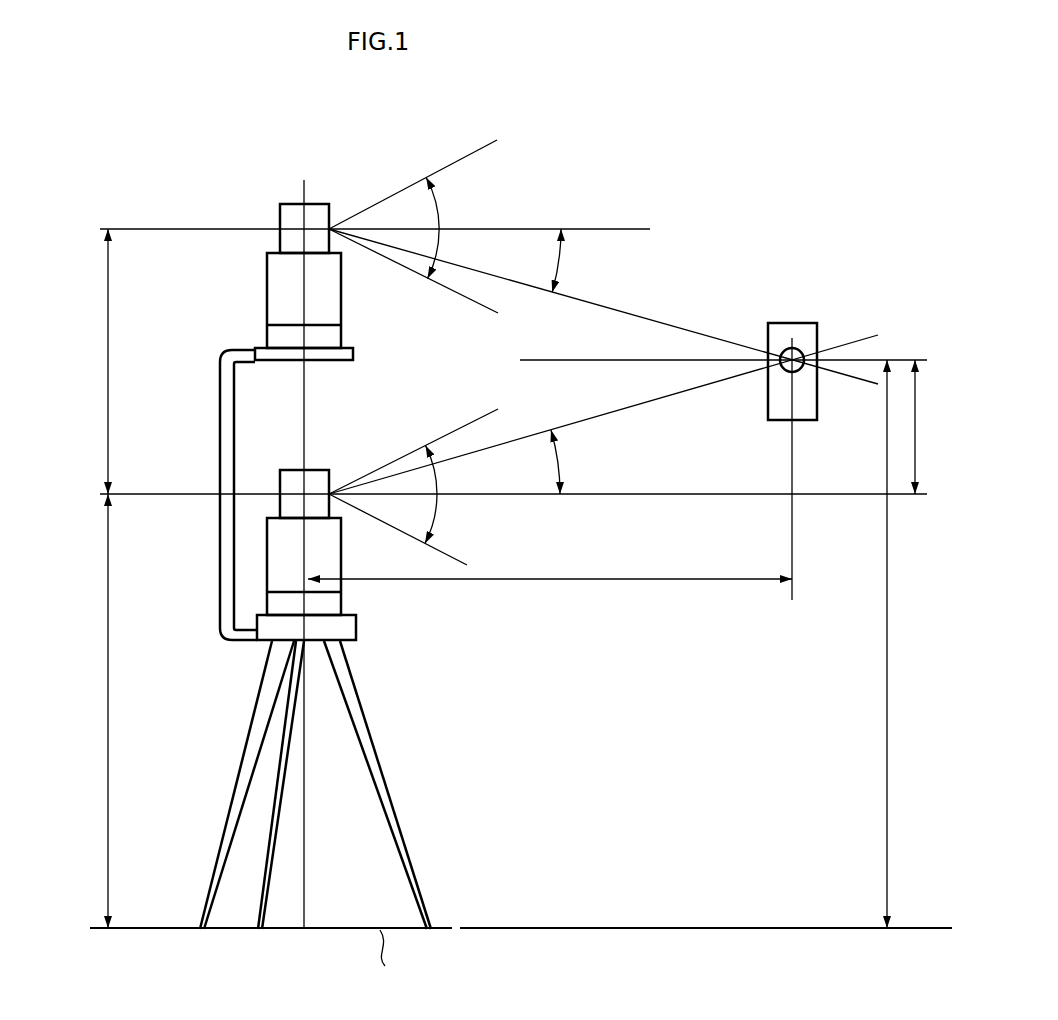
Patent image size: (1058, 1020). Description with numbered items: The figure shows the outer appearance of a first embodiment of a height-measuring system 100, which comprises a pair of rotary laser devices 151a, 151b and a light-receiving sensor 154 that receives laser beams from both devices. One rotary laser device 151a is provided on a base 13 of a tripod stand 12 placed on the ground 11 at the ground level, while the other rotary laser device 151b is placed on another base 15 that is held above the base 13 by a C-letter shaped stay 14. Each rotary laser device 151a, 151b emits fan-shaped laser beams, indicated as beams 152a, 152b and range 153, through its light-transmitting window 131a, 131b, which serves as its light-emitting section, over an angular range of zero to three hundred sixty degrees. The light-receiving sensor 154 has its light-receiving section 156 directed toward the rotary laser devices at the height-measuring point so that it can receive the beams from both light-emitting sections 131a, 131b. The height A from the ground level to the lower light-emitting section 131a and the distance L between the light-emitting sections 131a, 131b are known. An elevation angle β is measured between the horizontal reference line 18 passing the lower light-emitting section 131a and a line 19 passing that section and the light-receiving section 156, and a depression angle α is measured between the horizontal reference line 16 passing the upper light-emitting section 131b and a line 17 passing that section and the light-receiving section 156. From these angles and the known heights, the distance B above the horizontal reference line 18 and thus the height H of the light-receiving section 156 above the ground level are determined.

The height-measuring system 100 is at (684, 240).
The ground 11 is at (435, 926).
The tripod stand 12 is at (378, 698).
The base 13 is at (356, 628).
The C-letter shaped stay 14 is at (220, 552).
The base 15 is at (353, 353).
The horizontal reference line 16 is at (592, 229).
The line 17 is at (633, 293).
The horizontal reference line 18 is at (690, 496).
The line 19 is at (700, 387).
The light-transmitting window 131a is at (330, 478).
The light-transmitting window 131b is at (330, 216).
The rotary laser device 151a is at (313, 462).
The rotary laser device 151b is at (262, 218).
The distance measuring light 152a is at (462, 152).
The distance measuring light 152b is at (448, 560).
The measuring light beam range 153 is at (518, 377).
The light-receiving sensor 154 is at (785, 323).
The light-receiving section 156 is at (803, 347).